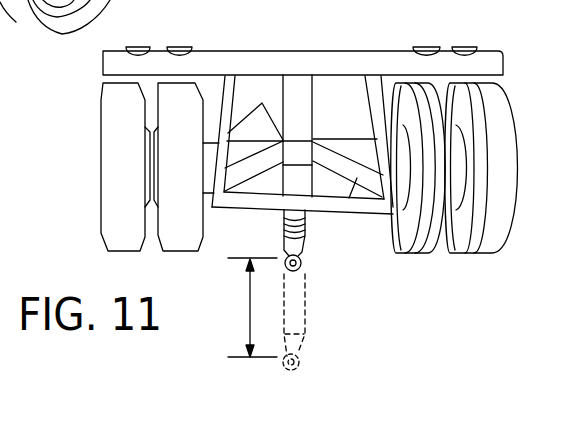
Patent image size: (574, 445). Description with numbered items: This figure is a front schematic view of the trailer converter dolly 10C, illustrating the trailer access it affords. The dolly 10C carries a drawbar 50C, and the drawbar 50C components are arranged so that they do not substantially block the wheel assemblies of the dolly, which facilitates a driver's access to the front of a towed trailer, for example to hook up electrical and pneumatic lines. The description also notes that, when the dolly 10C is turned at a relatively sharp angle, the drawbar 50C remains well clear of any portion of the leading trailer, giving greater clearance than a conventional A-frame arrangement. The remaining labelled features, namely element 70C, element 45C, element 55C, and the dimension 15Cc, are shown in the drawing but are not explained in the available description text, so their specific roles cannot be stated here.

The trailer converter dolly 10C is at (401, 281).
The truss frame 70C is at (322, 82).
The pivot axis 45C is at (308, 185).
The drawbar 50C is at (299, 236).
The pivot eye 55C is at (302, 268).
The stroke distance 15Cc is at (265, 204).